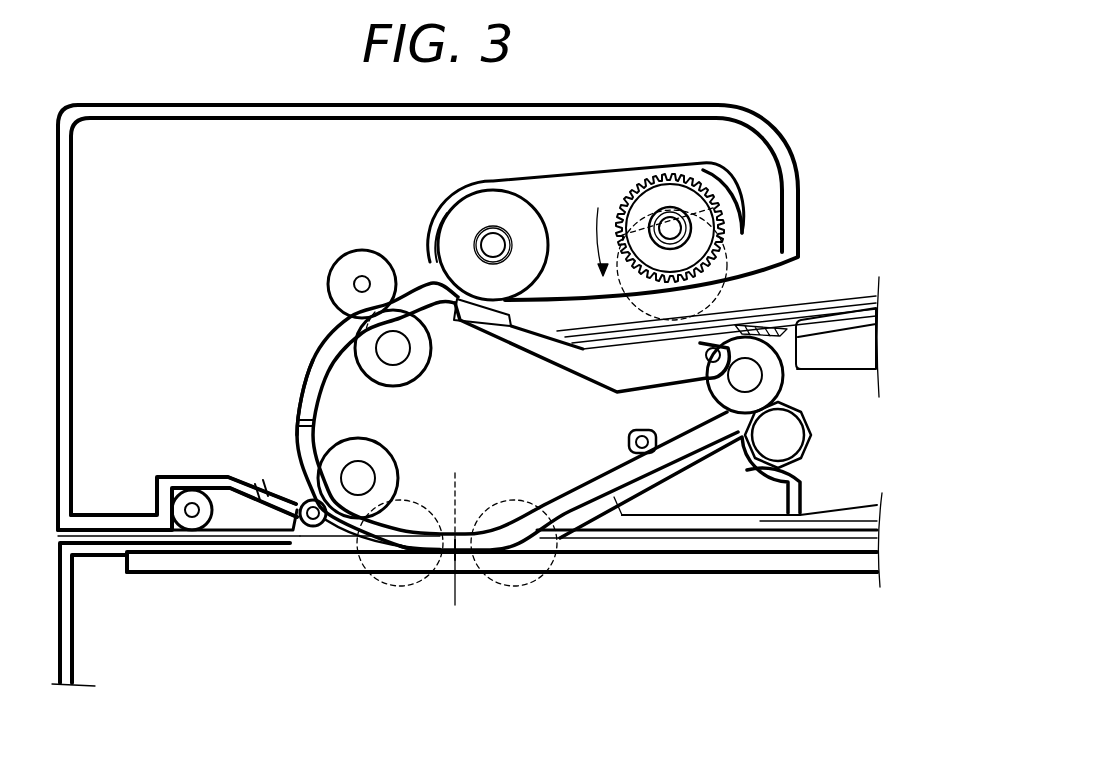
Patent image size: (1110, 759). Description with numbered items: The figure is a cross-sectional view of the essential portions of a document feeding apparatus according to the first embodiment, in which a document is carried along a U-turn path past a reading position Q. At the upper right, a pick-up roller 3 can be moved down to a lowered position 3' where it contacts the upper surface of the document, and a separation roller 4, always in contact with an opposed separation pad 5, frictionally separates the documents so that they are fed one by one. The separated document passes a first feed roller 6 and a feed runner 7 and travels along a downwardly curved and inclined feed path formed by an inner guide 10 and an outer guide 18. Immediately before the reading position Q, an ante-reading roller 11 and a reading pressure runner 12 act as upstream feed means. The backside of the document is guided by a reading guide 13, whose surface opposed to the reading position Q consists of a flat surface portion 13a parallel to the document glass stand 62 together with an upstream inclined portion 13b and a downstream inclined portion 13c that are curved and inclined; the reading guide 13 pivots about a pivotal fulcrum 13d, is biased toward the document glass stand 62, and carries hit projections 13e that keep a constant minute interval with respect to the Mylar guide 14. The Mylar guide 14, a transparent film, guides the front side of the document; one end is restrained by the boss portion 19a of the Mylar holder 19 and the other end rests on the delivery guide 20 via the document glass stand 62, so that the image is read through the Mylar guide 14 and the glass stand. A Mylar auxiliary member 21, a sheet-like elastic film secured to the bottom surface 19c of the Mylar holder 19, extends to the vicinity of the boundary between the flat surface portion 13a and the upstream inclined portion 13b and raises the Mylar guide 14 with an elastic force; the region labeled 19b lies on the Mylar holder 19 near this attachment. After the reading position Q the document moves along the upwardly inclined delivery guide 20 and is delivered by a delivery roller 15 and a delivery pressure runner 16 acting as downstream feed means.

The pick-up roller 3 is at (671, 222).
The pick-up roller contact position 3' is at (738, 201).
The separation roller 4 is at (492, 198).
The separation pad 5 is at (497, 303).
The first feed roller 6 is at (370, 312).
The feed runner 7 is at (357, 252).
The inner guide 10 is at (330, 380).
The ante-reading roller 11 is at (377, 453).
The reading pressure runner 12 is at (258, 487).
The reading guide 13 is at (313, 447).
The flat surface portion 13a is at (470, 537).
The upstream inclined portion 13b is at (375, 578).
The downstream inclined portion 13c is at (547, 573).
The pivotal fulcrum 13d is at (633, 441).
The hit projections 13e is at (468, 562).
The Mylar guide 14 is at (395, 512).
The delivery roller 15 is at (780, 381).
The delivery pressure runner 16 is at (812, 440).
The outer guide 18 is at (313, 372).
The Mylar holder 19 is at (280, 522).
The boss portion 19a is at (300, 505).
The guide edge 19b is at (337, 550).
The bottom surface 19c is at (192, 525).
The delivery guide 20 is at (600, 520).
The Mylar auxiliary member 21 is at (365, 545).
The document glass stand 62 is at (695, 575).
The reading position Q is at (450, 584).